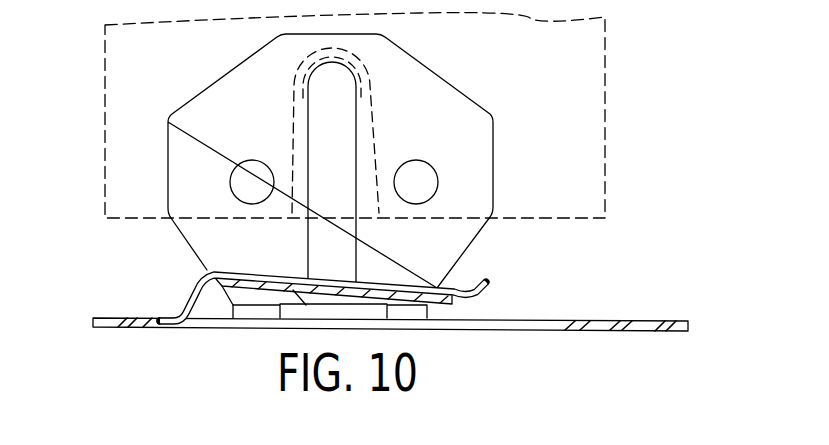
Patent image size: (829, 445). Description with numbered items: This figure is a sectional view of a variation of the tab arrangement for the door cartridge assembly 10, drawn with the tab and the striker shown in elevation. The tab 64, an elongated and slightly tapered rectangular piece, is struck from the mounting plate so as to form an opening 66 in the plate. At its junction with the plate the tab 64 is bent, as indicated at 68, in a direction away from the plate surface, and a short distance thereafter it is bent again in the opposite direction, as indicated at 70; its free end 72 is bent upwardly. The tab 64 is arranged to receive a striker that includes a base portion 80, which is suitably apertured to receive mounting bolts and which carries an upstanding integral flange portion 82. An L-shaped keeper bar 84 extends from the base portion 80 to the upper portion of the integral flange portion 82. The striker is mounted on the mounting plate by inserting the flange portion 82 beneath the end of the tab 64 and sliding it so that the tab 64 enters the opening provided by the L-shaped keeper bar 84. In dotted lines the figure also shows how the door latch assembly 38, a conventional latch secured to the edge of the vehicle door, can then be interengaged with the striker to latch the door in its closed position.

The door cartridge assembly 10 is at (650, 304).
The door latch assembly 38 is at (607, 143).
The tab 64 is at (391, 290).
The opening 66 is at (556, 321).
The bend 68 is at (170, 318).
The bend 70 is at (194, 279).
The free end 72 is at (484, 283).
The base portion 80 is at (447, 93).
The integral flange portion 82 is at (328, 307).
The L-shaped keeper bar 84 is at (347, 140).